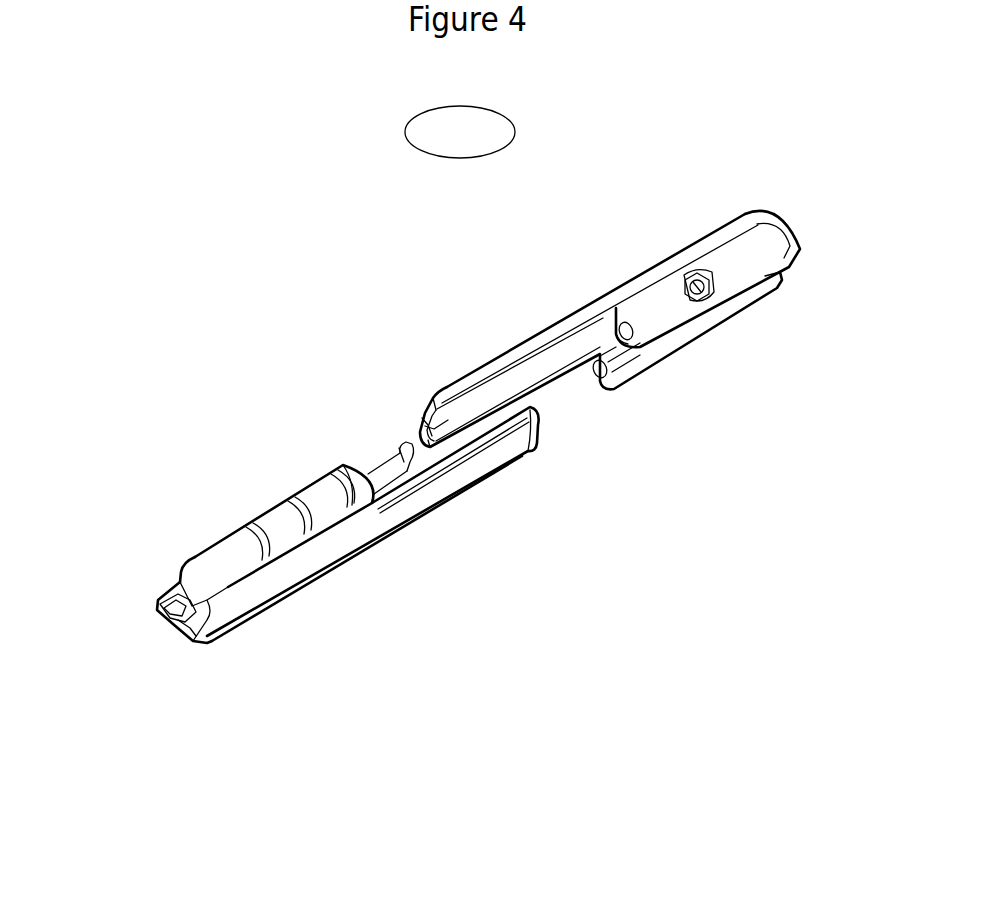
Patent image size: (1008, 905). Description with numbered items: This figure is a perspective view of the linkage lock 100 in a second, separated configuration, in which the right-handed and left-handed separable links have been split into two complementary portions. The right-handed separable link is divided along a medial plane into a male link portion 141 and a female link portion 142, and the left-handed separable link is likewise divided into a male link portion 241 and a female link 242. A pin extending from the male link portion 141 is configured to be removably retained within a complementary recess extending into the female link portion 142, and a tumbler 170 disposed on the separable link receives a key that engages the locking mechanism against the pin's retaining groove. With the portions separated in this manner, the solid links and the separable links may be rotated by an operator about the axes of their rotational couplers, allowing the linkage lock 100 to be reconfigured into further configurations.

The linkage lock 100 is at (460, 132).
The male link portion 141 is at (197, 563).
The female link portion 142 is at (770, 252).
The tumbler 170 is at (698, 283).
The male link portion 241 is at (162, 617).
The female link 242 is at (742, 303).